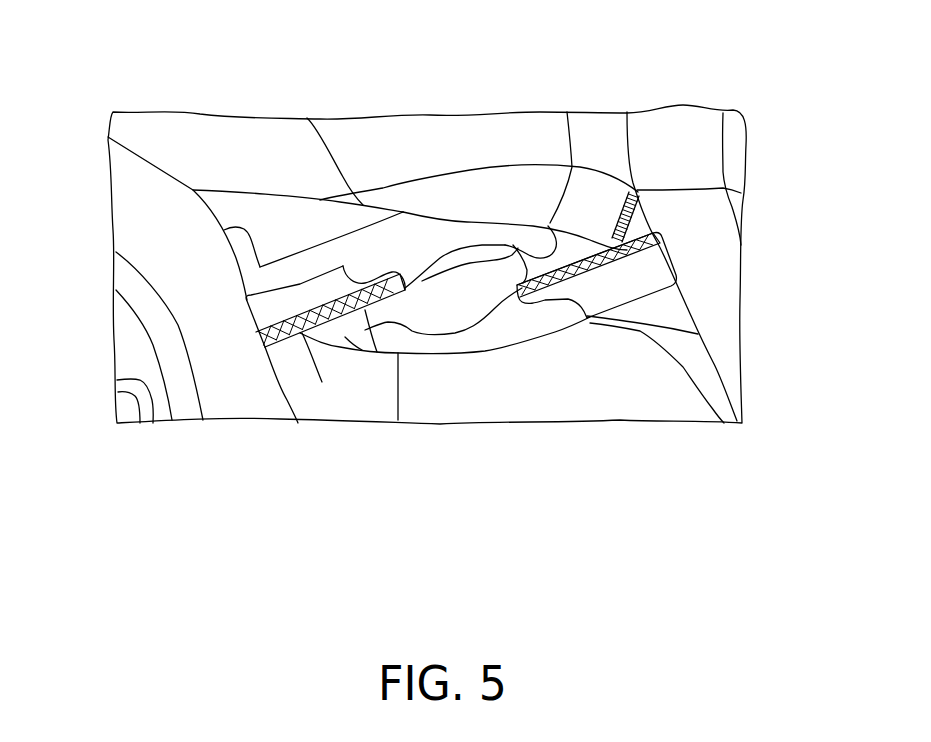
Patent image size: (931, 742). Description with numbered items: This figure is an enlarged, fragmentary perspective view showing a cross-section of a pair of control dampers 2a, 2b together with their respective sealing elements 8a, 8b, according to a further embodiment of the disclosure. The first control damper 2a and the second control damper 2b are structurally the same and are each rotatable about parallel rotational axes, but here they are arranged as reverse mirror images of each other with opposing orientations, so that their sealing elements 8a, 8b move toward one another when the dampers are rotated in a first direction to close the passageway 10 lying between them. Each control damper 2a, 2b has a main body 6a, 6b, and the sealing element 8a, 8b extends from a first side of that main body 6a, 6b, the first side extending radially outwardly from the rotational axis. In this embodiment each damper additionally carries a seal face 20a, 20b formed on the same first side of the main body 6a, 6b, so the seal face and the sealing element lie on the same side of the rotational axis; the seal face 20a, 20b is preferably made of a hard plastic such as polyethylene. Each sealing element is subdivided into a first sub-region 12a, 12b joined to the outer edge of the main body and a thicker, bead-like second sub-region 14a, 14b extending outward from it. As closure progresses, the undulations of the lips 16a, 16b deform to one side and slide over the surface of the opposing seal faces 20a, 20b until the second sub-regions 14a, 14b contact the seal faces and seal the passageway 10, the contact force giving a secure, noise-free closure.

The passageway 10 is at (563, 390).
The first control damper 2a is at (273, 192).
The second control damper 2b is at (635, 337).
The main body 6a is at (283, 300).
The main body 6b is at (640, 272).
The sealing element 8a is at (441, 222).
The sealing element 8b is at (465, 355).
The first sub-region 12a is at (533, 237).
The first sub-region 12b is at (493, 337).
The second sub-region 14a is at (463, 240).
The second sub-region 14b is at (392, 340).
The lip 16a is at (634, 184).
The lip 16b is at (345, 337).
The seal face 20a is at (291, 336).
The seal face 20b is at (602, 318).